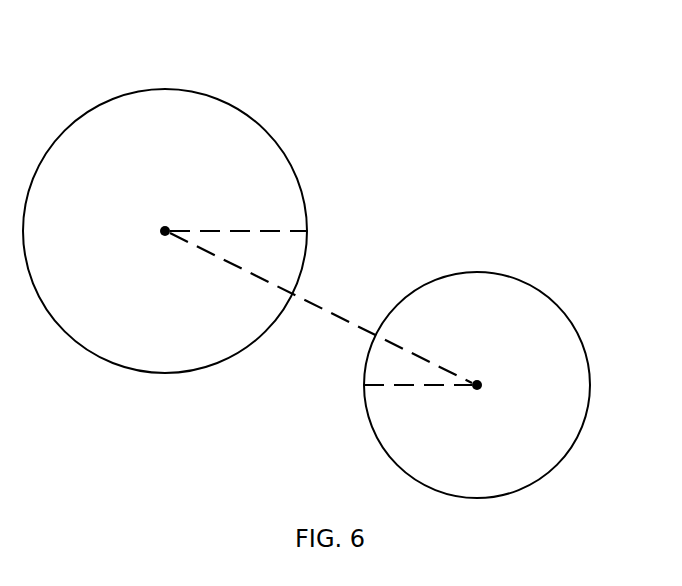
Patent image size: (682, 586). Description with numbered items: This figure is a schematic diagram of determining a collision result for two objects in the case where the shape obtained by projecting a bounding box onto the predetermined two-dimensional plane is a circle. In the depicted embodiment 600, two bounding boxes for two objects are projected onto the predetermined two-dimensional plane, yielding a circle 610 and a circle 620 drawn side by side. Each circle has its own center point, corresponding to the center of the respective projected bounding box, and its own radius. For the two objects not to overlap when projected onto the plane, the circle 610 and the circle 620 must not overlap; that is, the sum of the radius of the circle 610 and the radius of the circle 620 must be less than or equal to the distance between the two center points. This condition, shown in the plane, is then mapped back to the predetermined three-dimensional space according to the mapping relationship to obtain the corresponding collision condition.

The embodiment 600 is at (82, 32).
The circle 610 is at (170, 88).
The circle 620 is at (475, 272).